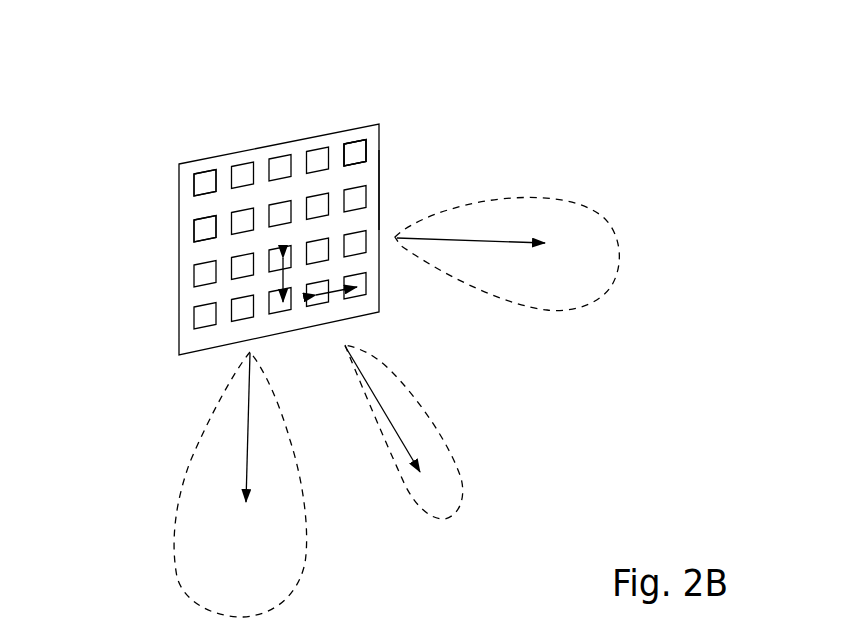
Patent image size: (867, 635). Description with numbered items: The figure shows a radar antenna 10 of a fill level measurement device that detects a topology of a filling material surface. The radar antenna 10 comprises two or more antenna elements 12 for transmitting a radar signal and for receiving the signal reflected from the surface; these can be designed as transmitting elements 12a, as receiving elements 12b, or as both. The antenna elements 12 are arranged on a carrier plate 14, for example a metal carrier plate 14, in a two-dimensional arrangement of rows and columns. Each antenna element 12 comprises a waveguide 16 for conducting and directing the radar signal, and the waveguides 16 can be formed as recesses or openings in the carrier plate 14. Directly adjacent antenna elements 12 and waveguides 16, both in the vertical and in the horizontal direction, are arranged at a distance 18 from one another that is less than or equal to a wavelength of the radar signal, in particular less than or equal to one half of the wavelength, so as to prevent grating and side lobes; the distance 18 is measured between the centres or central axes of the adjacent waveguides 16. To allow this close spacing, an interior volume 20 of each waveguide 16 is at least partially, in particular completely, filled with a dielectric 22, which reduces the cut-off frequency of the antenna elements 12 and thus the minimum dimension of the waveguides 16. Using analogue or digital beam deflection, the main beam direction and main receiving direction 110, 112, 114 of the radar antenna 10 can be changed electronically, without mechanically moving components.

The radar antenna 10 is at (245, 150).
The antenna elements 12 is at (293, 152).
The transmitting elements 12a is at (207, 180).
The receiving elements 12b is at (203, 227).
The carrier plate 14 is at (372, 170).
The waveguide 16 is at (367, 199).
The distance 18 is at (284, 283).
The interior volume 20 is at (365, 154).
The dielectric 22 is at (353, 152).
The main beam direction 110 is at (308, 528).
The main beam direction 112 is at (425, 420).
The main beam direction 114 is at (575, 198).